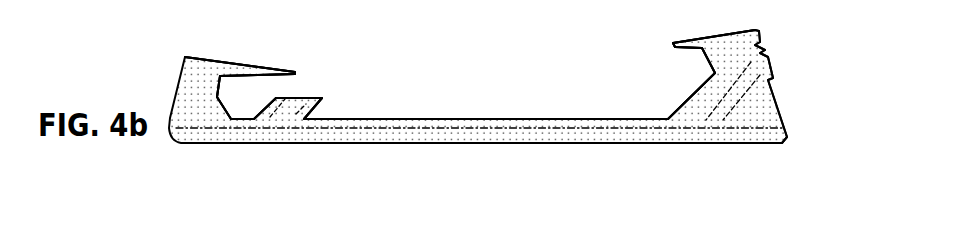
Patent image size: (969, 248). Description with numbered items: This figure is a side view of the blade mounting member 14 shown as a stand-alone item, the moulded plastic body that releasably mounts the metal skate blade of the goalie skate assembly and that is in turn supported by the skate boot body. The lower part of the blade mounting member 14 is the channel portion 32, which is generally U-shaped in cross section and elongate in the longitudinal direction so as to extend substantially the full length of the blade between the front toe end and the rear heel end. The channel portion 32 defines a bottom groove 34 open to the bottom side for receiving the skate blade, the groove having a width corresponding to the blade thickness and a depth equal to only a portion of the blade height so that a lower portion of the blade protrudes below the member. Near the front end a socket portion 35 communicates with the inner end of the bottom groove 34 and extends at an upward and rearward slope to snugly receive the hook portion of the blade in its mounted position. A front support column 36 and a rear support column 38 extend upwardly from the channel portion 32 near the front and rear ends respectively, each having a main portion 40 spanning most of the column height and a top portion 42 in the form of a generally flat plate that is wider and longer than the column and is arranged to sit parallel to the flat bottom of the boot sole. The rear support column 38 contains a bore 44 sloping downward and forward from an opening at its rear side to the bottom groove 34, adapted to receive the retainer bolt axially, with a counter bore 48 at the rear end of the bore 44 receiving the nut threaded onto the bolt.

The blade mounting member 14 is at (420, 185).
The channel portion 32 is at (517, 118).
The bottom groove 34 is at (540, 128).
The socket portion 35 is at (306, 110).
The front support column 36 is at (166, 90).
The rear support column 38 is at (786, 98).
The main portion 40 is at (217, 88).
The top portion 42 is at (252, 70).
The bore 44 is at (741, 110).
The counter bore 48 is at (750, 67).